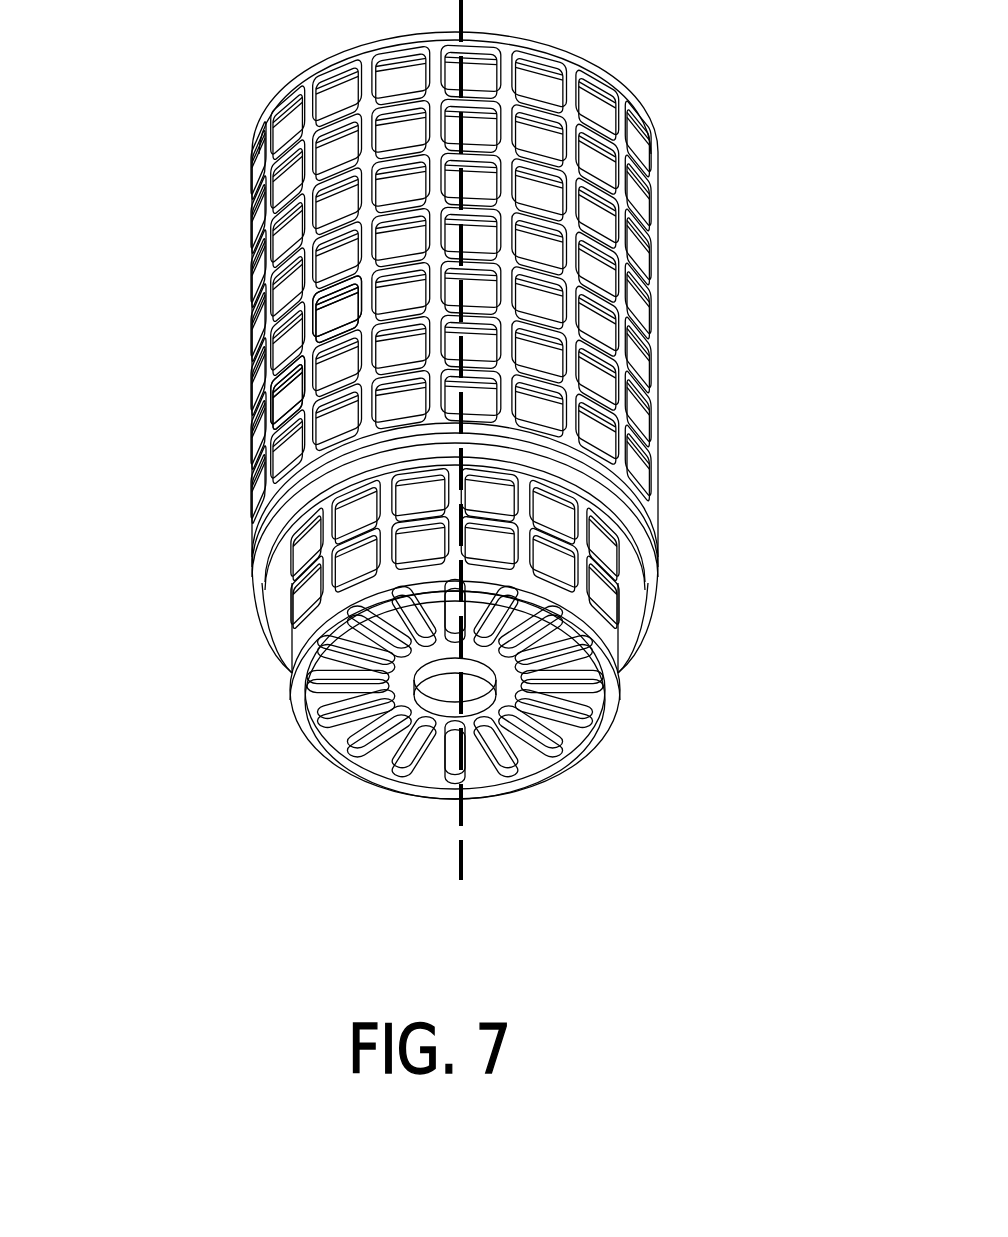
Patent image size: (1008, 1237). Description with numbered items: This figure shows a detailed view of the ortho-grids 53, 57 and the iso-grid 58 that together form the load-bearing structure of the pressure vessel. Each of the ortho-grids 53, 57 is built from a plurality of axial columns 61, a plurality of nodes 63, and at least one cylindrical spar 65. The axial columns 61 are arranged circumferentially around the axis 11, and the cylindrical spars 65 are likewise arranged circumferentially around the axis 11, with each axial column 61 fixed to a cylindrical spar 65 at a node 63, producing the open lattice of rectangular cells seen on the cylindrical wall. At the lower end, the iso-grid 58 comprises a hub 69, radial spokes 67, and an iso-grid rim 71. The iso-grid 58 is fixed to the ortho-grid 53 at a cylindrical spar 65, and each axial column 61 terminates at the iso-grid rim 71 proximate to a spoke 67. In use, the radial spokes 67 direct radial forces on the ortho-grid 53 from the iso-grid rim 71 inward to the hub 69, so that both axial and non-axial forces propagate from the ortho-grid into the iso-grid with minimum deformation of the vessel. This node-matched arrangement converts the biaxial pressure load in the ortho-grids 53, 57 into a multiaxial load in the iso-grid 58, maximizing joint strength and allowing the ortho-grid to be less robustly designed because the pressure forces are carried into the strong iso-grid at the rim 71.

The axis 11 is at (462, 873).
The ortho-grid 53 is at (617, 582).
The second ortho-grid 57 is at (658, 210).
The iso-grid 58 is at (573, 775).
The axial columns 61 is at (363, 133).
The nodes 63 is at (370, 295).
The cylindrical spar 65 is at (333, 360).
The radial spokes 67 is at (400, 763).
The hub 69 is at (485, 725).
The iso-grid rim 71 is at (617, 692).